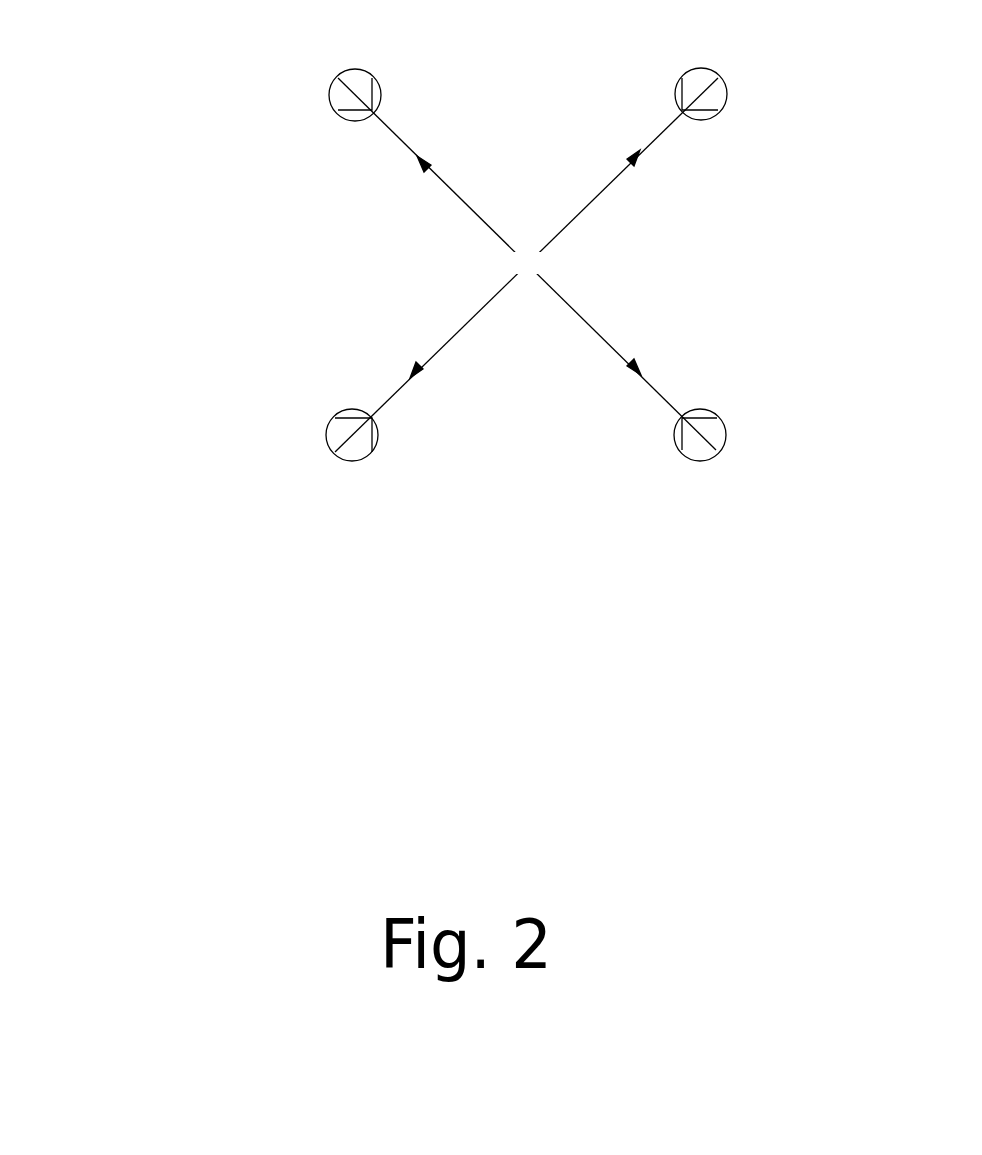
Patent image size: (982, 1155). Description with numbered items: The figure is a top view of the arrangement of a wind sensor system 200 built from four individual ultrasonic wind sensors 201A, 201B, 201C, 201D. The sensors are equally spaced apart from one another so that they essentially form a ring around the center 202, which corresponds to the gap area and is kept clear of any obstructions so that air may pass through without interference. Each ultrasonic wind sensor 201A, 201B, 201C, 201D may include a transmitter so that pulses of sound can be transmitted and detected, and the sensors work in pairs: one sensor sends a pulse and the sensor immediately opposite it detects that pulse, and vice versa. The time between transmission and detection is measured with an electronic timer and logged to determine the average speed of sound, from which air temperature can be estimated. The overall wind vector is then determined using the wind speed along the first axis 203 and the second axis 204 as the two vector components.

The wind sensor system 200 is at (442, 259).
The ultrasonic wind sensor 201A is at (372, 73).
The ultrasonic wind sensor 201B is at (722, 82).
The ultrasonic wind sensor 201C is at (377, 428).
The ultrasonic wind sensor 201D is at (720, 420).
The center 202 is at (627, 266).
The first axis 203 is at (464, 264).
The second axis 204 is at (461, 265).